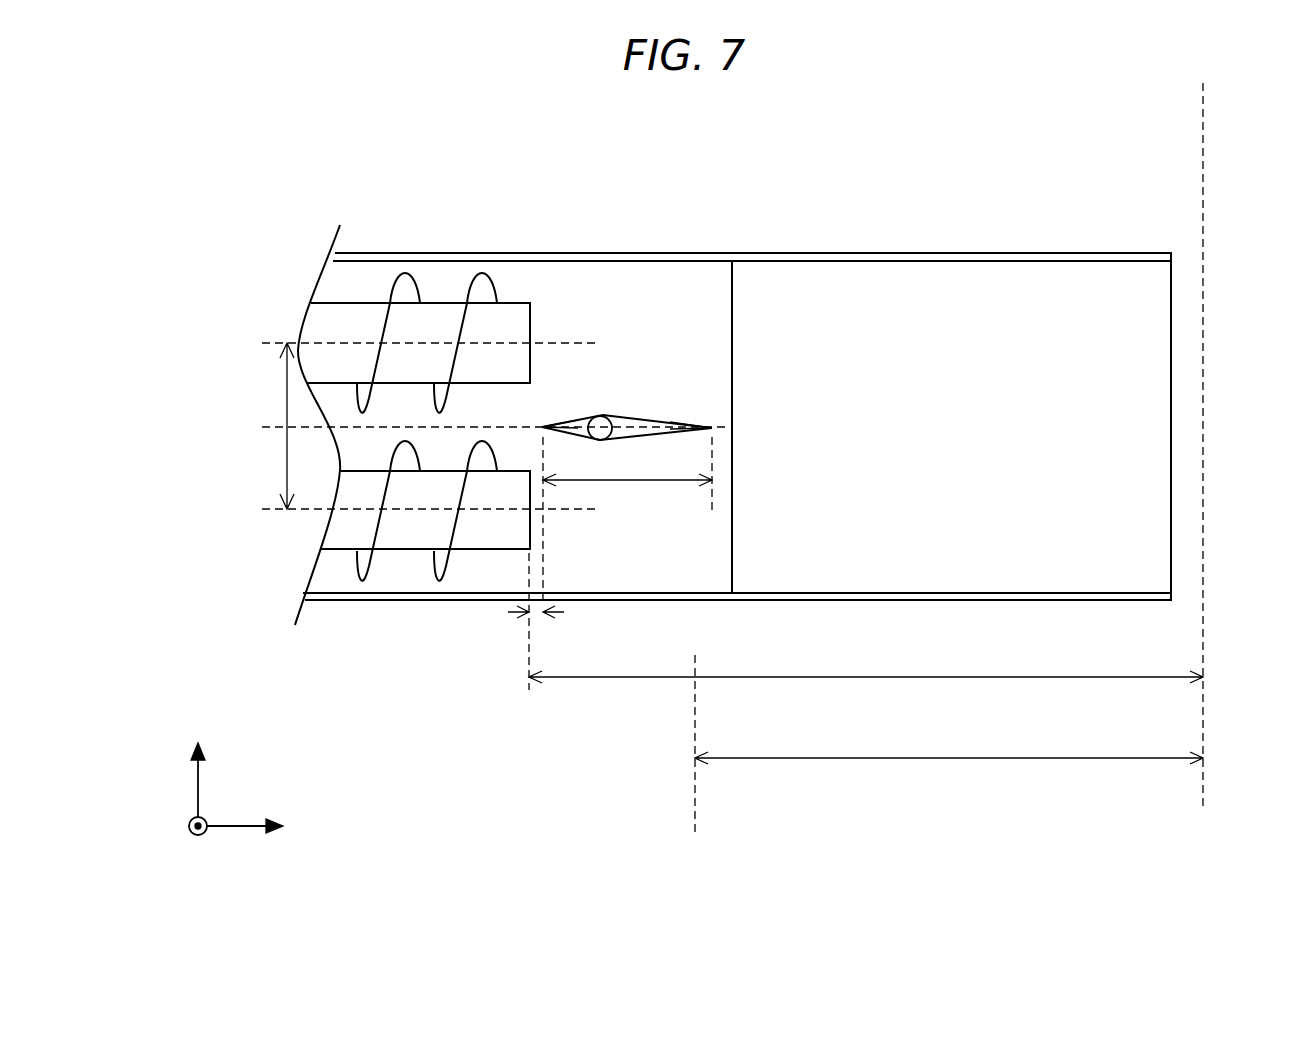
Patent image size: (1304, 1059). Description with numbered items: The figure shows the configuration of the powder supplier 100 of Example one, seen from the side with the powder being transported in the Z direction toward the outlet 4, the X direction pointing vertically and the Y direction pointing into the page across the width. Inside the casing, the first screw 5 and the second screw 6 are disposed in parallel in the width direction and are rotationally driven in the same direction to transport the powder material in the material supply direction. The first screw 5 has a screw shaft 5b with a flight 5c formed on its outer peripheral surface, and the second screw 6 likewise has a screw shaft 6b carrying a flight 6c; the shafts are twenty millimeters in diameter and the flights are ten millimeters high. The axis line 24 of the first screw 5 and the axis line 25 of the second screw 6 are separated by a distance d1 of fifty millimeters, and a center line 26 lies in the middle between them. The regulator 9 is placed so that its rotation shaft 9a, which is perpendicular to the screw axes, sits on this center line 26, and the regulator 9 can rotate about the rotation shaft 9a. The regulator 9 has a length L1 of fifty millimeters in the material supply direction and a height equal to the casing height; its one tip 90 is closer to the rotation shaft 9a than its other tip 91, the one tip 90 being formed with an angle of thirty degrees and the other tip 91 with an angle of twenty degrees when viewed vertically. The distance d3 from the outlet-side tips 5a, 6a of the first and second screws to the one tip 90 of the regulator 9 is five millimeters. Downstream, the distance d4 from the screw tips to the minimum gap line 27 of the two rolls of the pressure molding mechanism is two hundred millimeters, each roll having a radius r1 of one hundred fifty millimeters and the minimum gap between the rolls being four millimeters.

The powder supplier 100 is at (843, 152).
The outlet 4 is at (1171, 313).
The second screw 6 is at (424, 251).
The tip of second screw 6a is at (531, 322).
The screw shaft of second screw 6b is at (427, 283).
The flight of second screw 6c is at (479, 281).
The first screw 5 is at (430, 591).
The tip of first screw 5a is at (532, 527).
The screw shaft of first screw 5b is at (427, 561).
The flight of first screw 5c is at (435, 557).
The axis line of second screw 25 is at (268, 343).
The center line 26 is at (268, 427).
The axis line of first screw 24 is at (277, 512).
The distance between axis lines d1 is at (287, 465).
The regulator 9 is at (641, 264).
The rotation shaft 9a is at (600, 420).
The one tip 90 is at (543, 423).
The other tip 91 is at (716, 425).
The length of regulator L1 is at (630, 482).
The distance from screw tips to regulator tip d3 is at (533, 612).
The distance from screw tips to minimum gap line d4 is at (605, 677).
The radius of rolls r1 is at (792, 758).
The minimum gap line 27 is at (1203, 812).
The X direction X is at (198, 764).
The Y direction Y is at (189, 841).
The Z direction Z is at (258, 829).